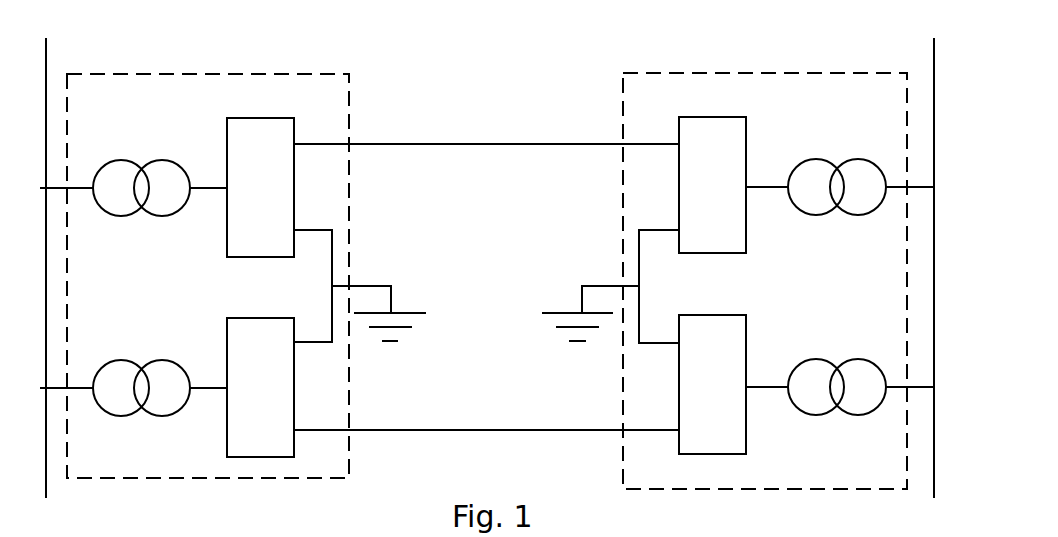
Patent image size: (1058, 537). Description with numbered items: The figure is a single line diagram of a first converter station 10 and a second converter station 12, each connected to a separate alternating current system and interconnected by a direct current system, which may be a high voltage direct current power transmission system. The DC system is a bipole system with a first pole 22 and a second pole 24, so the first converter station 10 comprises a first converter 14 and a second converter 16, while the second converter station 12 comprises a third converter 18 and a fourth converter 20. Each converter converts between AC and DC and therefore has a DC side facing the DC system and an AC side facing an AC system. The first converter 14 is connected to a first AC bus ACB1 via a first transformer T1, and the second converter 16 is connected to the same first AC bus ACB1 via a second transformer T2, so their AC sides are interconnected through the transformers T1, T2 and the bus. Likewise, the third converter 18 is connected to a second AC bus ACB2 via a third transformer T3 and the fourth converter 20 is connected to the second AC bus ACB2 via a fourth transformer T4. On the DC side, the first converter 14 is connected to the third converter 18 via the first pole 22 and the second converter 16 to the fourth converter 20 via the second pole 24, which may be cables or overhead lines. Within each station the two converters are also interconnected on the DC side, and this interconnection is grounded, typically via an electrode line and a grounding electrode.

The first converter station 10 is at (680, 73).
The second converter station 12 is at (242, 72).
The first converter 14 is at (712, 185).
The second converter 16 is at (712, 384).
The third converter 18 is at (260, 187).
The fourth converter 20 is at (260, 387).
The first pole 22 is at (537, 144).
The second pole 24 is at (490, 430).
The first transformer T1 is at (825, 160).
The second transformer T2 is at (830, 362).
The third transformer T3 is at (138, 160).
The fourth transformer T4 is at (137, 362).
The first AC bus ACB1 is at (912, 249).
The second AC bus ACB2 is at (75, 250).